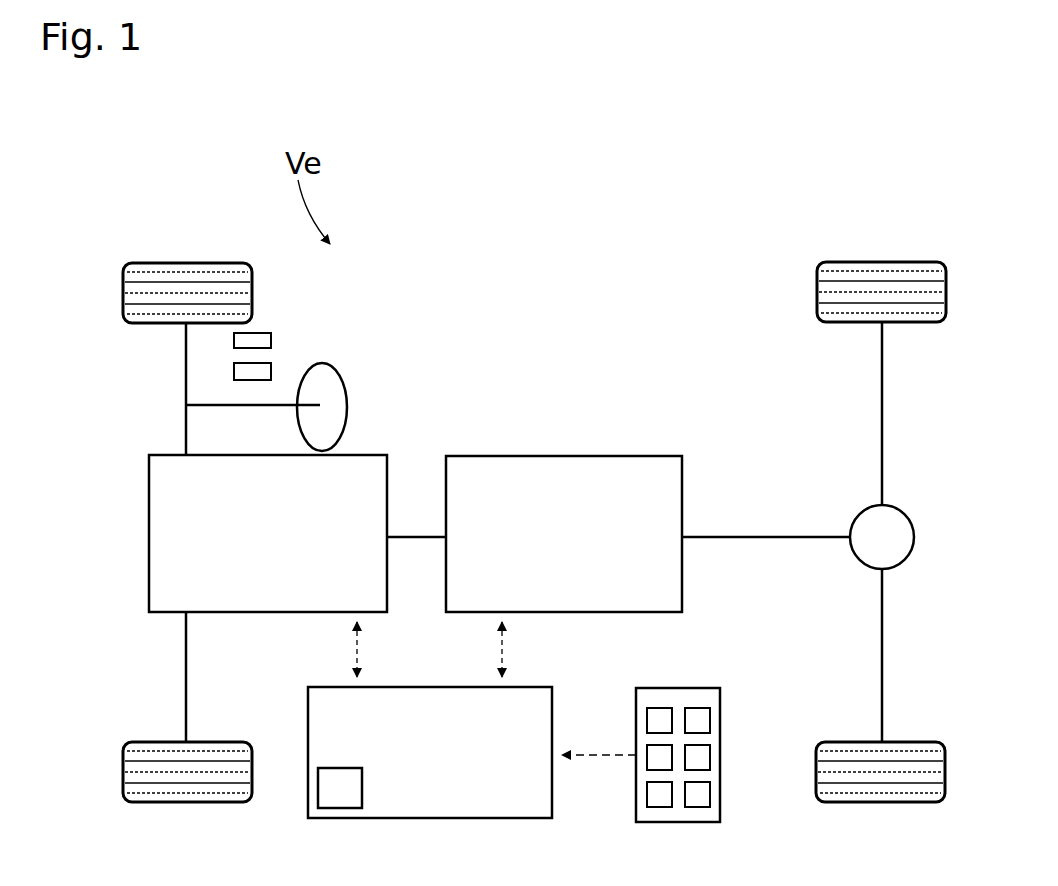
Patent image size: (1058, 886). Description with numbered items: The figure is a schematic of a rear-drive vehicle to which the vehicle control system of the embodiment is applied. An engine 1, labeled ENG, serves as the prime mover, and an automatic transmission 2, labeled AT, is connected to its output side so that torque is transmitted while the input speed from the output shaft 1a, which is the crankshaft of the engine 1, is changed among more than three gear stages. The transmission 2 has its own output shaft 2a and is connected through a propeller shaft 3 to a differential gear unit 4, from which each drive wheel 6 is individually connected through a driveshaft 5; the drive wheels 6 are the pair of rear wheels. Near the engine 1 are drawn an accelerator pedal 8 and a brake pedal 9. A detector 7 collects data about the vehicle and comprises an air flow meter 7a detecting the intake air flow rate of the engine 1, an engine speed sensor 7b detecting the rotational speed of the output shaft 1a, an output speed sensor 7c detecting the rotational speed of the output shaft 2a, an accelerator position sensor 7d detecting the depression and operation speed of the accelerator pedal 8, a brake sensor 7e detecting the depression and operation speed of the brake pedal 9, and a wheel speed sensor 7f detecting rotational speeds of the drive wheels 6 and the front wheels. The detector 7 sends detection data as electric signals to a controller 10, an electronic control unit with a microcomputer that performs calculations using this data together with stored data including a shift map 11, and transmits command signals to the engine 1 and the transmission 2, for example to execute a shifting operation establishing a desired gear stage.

The engine 1 is at (148, 538).
The output shaft 1a is at (418, 535).
The automatic transmission 2 is at (554, 455).
The output shaft 2a is at (704, 534).
The propeller shaft 3 is at (790, 540).
The differential gear unit 4 is at (915, 537).
The driveshaft 5 is at (884, 418).
The drive wheel 6 is at (916, 262).
The detector 7 is at (674, 783).
The air flow meter 7a is at (647, 722).
The engine speed sensor 7b is at (655, 758).
The output speed sensor 7c is at (658, 796).
The accelerator position sensor 7d is at (699, 718).
The brake sensor 7e is at (699, 756).
The wheel speed sensor 7f is at (698, 793).
The accelerator pedal 8 is at (271, 340).
The brake pedal 9 is at (271, 371).
The controller 10 is at (306, 716).
The shift map 11 is at (338, 809).